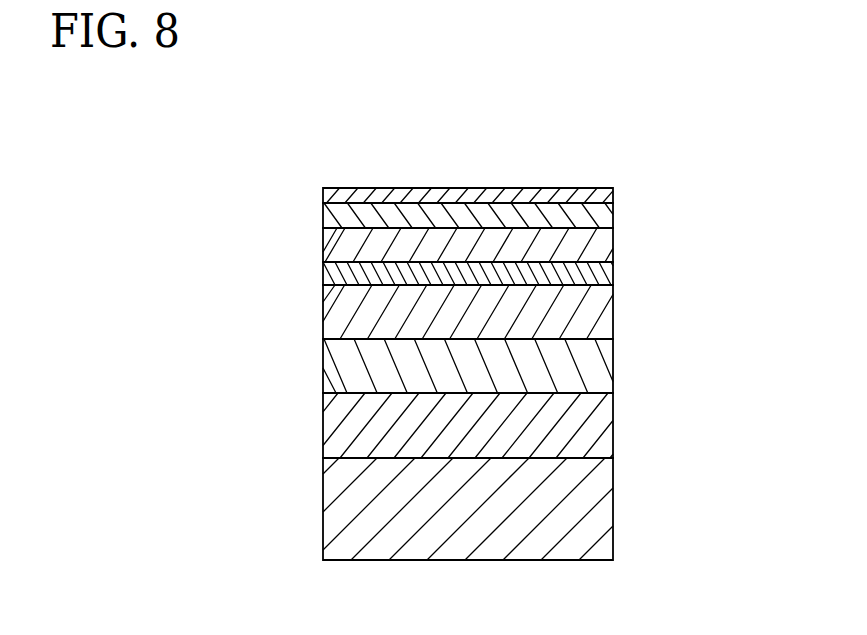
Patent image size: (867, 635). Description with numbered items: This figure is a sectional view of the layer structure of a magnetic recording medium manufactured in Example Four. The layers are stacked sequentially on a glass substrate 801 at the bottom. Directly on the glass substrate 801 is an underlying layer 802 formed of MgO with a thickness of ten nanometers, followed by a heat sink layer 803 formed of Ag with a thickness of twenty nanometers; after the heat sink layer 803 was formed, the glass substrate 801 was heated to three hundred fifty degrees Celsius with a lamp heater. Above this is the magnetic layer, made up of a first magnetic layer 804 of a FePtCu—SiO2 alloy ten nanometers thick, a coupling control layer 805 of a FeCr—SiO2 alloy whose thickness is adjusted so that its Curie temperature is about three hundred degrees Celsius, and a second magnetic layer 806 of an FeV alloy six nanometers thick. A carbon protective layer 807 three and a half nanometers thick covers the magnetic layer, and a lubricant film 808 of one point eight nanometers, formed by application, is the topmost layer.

The glass substrate 801 is at (593, 508).
The underlying layer 802 is at (598, 427).
The heat sink layer 803 is at (598, 364).
The first magnetic layer 804 is at (598, 310).
The coupling control layer 805 is at (598, 272).
The second magnetic layer 806 is at (597, 243).
The carbon protective layer 807 is at (600, 215).
The lubricant film 808 is at (600, 195).